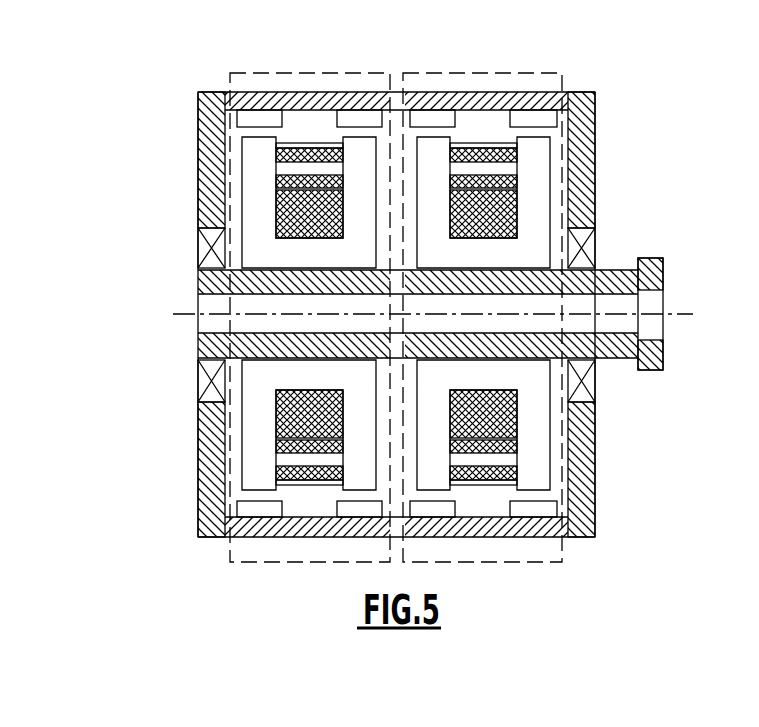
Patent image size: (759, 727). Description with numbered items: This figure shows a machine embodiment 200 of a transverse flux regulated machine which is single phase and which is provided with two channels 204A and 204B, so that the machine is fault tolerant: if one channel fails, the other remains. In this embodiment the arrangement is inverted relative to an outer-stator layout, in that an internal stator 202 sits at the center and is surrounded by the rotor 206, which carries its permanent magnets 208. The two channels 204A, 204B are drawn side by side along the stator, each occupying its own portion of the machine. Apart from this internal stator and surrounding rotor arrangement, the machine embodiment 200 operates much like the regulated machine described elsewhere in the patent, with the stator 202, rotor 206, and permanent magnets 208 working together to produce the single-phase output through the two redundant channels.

The machine embodiment 200 is at (143, 350).
The internal stator 202 is at (618, 268).
The first channel 204A is at (276, 212).
The second channel 204B is at (512, 208).
The rotor 206 is at (263, 101).
The permanent magnets 208 is at (276, 118).